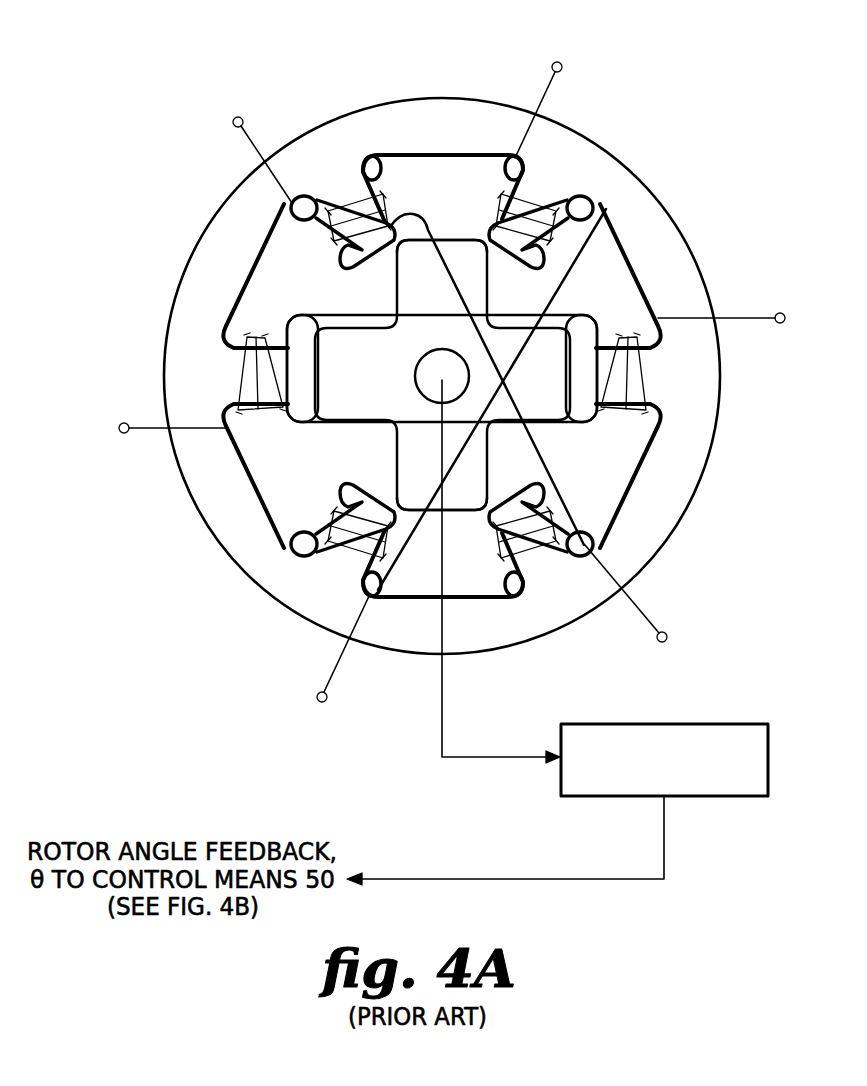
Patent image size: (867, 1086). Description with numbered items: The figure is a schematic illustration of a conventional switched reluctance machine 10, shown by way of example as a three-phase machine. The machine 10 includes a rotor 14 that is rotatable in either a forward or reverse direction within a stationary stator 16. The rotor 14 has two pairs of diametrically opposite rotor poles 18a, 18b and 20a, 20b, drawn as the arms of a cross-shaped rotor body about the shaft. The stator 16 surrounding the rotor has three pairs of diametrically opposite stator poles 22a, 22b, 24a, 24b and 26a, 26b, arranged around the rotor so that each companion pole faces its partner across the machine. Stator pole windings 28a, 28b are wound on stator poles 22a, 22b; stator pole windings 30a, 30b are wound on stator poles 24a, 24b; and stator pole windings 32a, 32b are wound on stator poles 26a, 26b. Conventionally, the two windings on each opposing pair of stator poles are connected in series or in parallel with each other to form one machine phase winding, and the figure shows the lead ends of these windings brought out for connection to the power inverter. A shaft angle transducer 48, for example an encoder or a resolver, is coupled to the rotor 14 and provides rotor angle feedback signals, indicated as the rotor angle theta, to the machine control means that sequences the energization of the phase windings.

The switched reluctance machine 10 is at (644, 108).
The rotor 14 is at (555, 412).
The stator 16 is at (217, 262).
The rotor pole 18a is at (340, 410).
The rotor pole 18b is at (610, 348).
The rotor pole 20a is at (453, 248).
The rotor pole 20b is at (458, 512).
The stator pole 22a is at (245, 358).
The stator pole 22b is at (697, 261).
The stator pole 24a is at (372, 194).
The stator pole 24b is at (532, 612).
The stator pole 26a is at (615, 213).
The stator pole 26b is at (272, 533).
The stator pole winding 28a is at (236, 436).
The stator pole winding 28b is at (690, 380).
The stator pole winding 30a is at (357, 210).
The stator pole winding 30b is at (640, 508).
The stator pole winding 32a is at (497, 207).
The stator pole winding 32b is at (348, 562).
The shaft angle transducer 48 is at (705, 797).